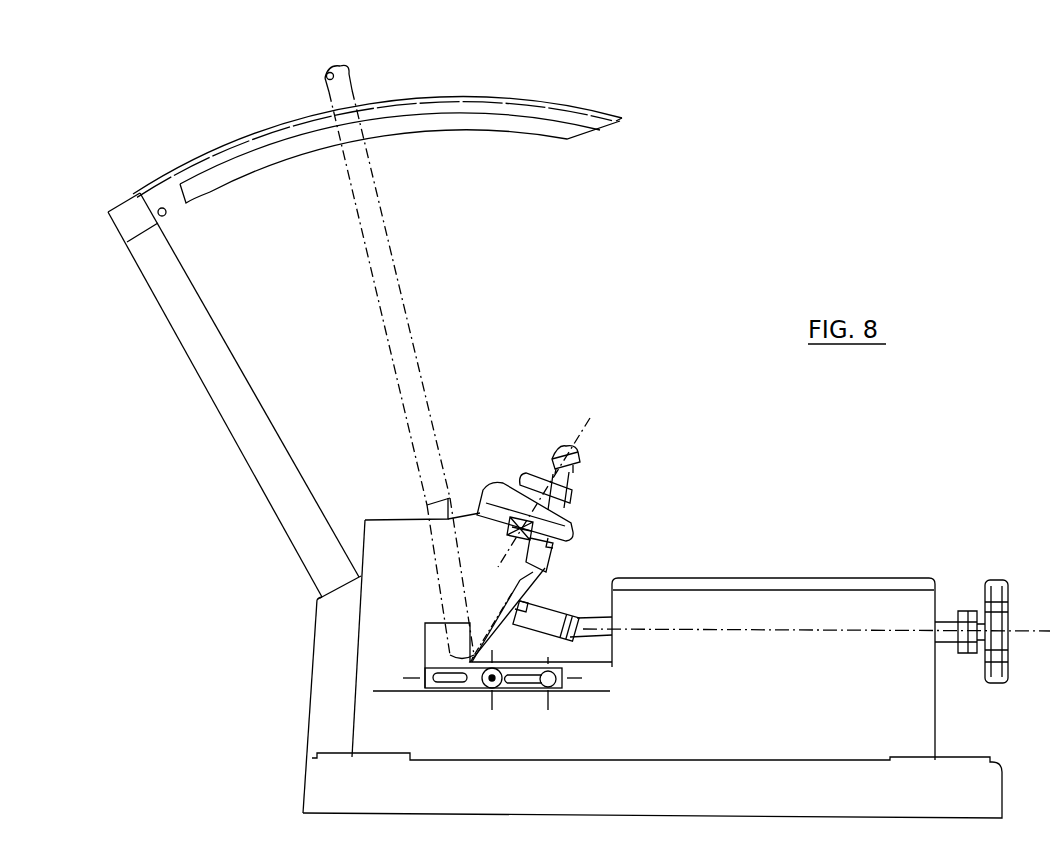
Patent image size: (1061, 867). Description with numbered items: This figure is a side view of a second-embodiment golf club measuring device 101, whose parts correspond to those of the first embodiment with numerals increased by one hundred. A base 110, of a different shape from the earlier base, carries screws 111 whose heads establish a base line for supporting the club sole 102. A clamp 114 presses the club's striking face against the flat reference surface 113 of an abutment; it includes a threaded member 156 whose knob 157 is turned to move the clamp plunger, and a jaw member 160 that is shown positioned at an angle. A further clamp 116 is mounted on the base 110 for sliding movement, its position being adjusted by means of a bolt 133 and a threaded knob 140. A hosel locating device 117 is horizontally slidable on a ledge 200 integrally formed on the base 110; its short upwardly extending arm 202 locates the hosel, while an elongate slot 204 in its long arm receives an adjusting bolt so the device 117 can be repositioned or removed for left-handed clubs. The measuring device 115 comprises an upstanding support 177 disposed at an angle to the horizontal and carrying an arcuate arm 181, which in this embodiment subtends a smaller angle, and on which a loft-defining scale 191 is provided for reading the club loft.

The golf club measuring device 101 is at (686, 267).
The sole 102 is at (391, 247).
The base 110 is at (968, 731).
The screws 111 is at (480, 672).
The flat reference surface 113 is at (543, 577).
The clamp 114 is at (744, 564).
The measuring device 115 is at (200, 440).
The further clamp 116 is at (502, 434).
The hosel locating device 117 is at (437, 690).
The bolt 133 is at (568, 474).
The threaded knob 140 is at (568, 502).
The threaded member 156 is at (947, 618).
The knob 157 is at (1006, 601).
The jaw member 160 is at (554, 593).
The upstanding support 177 is at (195, 296).
The arcuate arm 181 is at (514, 125).
The loft-defining scale 191 is at (535, 101).
The ledge 200 is at (576, 688).
The short upwardly extending arm 202 is at (437, 640).
The elongate slot 204 is at (523, 687).